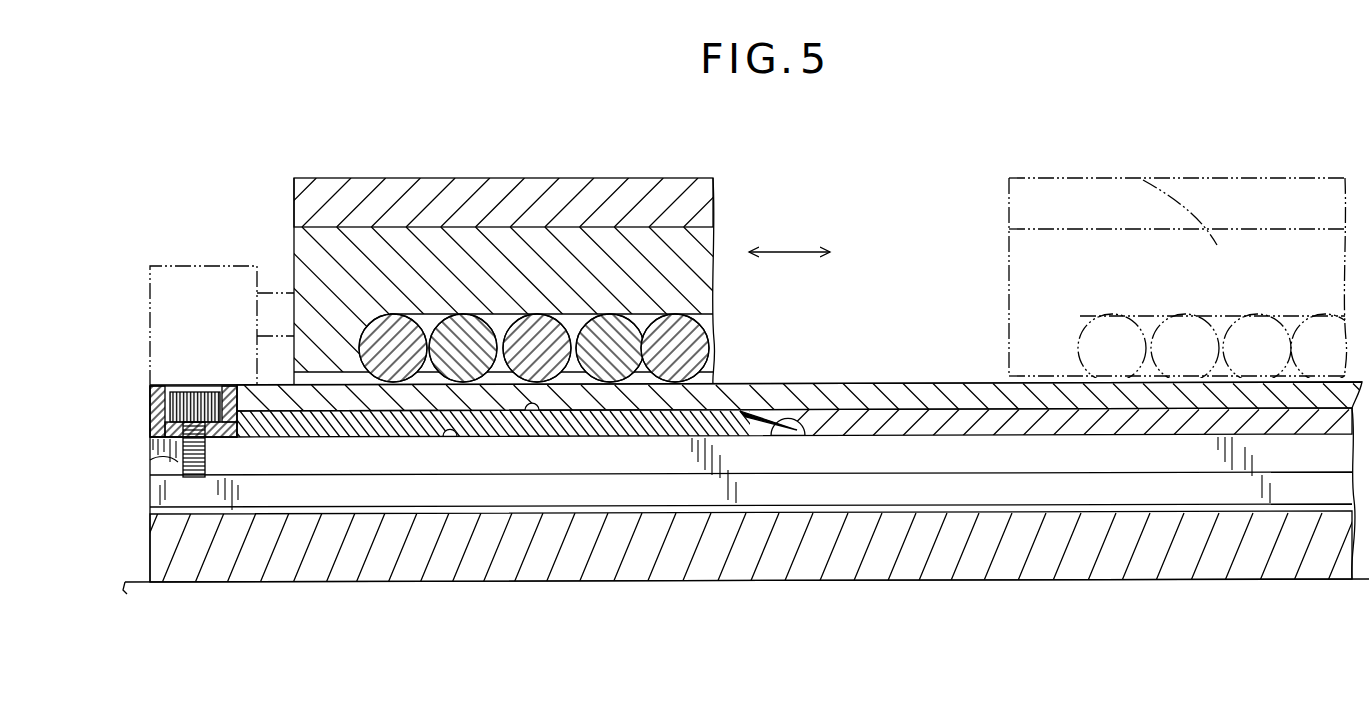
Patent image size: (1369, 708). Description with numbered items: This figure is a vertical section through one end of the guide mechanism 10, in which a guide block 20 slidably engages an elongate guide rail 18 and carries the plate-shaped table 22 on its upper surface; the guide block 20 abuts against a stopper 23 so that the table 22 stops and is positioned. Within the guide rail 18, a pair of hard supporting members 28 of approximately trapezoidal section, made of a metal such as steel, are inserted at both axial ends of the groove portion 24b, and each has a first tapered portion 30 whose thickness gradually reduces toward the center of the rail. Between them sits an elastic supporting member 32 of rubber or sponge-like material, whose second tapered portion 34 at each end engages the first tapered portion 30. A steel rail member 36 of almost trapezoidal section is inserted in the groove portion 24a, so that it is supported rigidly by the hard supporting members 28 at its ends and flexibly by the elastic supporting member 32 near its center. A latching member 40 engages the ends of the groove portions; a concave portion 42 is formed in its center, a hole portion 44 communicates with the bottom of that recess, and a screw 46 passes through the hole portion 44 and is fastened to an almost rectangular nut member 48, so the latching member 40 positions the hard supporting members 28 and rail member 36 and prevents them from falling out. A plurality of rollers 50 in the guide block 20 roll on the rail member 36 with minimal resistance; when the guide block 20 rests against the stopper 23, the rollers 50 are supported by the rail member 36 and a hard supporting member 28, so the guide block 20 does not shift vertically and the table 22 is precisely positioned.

The guide mechanism 10 is at (940, 142).
The guide rail 18 is at (372, 555).
The guide block 20 is at (405, 247).
The table 22 is at (530, 225).
The stopper 23 is at (215, 270).
The groove portion 24a is at (537, 412).
The groove portion 24b is at (458, 437).
The hard supporting members 28 is at (617, 436).
The first tapered portion 30 is at (760, 436).
The elastic supporting member 32 is at (933, 401).
The second tapered portion 34 is at (813, 436).
The rail member 36 is at (992, 396).
The latching member 40 is at (160, 393).
The concave portion 42 is at (190, 400).
The hole portion 44 is at (172, 447).
The screw 46 is at (200, 400).
The nut member 48 is at (212, 498).
The rollers 50 is at (610, 330).